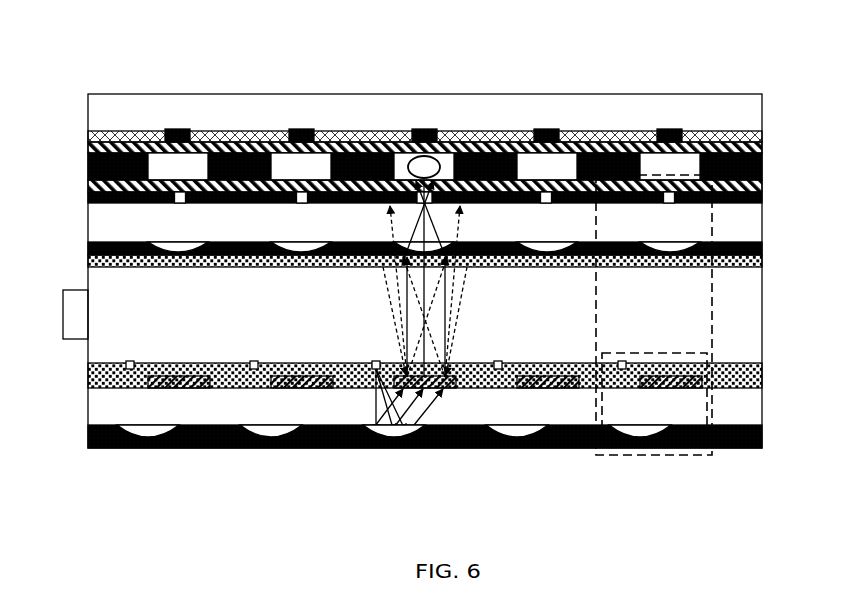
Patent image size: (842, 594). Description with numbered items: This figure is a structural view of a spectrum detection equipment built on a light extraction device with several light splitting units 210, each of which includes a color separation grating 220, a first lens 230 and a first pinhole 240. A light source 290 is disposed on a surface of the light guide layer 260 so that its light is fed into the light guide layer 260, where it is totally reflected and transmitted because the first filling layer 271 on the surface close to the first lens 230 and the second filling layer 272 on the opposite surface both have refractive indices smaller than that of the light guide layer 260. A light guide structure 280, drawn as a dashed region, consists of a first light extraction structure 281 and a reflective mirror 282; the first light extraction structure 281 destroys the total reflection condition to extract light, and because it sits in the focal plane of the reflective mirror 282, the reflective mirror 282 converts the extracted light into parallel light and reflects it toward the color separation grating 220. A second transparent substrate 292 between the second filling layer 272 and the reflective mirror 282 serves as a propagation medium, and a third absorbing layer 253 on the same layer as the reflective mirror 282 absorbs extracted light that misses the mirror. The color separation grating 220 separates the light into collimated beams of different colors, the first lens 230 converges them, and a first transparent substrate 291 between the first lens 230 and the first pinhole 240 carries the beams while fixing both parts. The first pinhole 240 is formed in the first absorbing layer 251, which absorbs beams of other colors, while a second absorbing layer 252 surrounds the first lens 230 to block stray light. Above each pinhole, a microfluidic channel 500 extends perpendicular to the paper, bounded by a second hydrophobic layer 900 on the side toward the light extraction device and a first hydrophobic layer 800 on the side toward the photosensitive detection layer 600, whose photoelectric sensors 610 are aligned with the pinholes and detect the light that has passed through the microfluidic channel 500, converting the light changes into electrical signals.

The first hydrophobic layer 800 is at (425, 87).
The photosensitive detection layer 600 is at (423, 85).
The photoelectric sensor 610 is at (459, 112).
The first absorbing layer 251 is at (425, 125).
The light splitting unit 210 is at (425, 104).
The microfluidic channel 500 is at (424, 104).
The second hydrophobic layer 900 is at (425, 128).
The first pinhole 240 is at (425, 115).
The first lens 230 is at (425, 160).
The first filling layer 271 is at (425, 147).
The first transparent substrate 291 is at (472, 221).
The light guide layer 260 is at (397, 353).
The color separation grating 220 is at (425, 431).
The second filling layer 272 is at (425, 437).
The first light extraction structure 281 is at (431, 449).
The second transparent substrate 292 is at (354, 444).
The second absorbing layer 252 is at (425, 462).
The third absorbing layer 253 is at (332, 481).
The reflective mirror 282 is at (703, 232).
The light guide structure 280 is at (672, 337).
The light source 290 is at (105, 395).